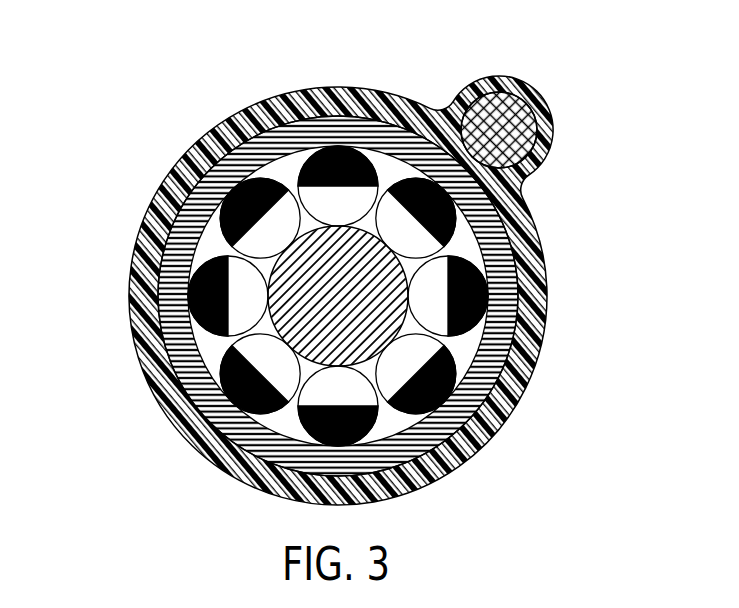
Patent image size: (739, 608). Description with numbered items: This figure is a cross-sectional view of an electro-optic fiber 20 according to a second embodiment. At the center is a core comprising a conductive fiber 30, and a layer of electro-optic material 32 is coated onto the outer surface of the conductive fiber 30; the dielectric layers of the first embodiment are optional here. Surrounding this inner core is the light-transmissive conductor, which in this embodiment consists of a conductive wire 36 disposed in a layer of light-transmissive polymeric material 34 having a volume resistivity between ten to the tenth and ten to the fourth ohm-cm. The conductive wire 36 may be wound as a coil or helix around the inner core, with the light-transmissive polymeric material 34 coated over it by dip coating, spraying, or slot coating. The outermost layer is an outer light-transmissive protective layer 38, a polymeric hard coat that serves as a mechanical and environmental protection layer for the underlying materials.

The electro-optic fiber 20 is at (351, 252).
The conductive fiber 30 is at (355, 307).
The layer of electro-optic material 32 is at (465, 337).
The layer of light-transmissive polymeric material 34 is at (520, 290).
The conductive wire 36 is at (522, 128).
The outer light-transmissive protective layer 38 is at (322, 86).